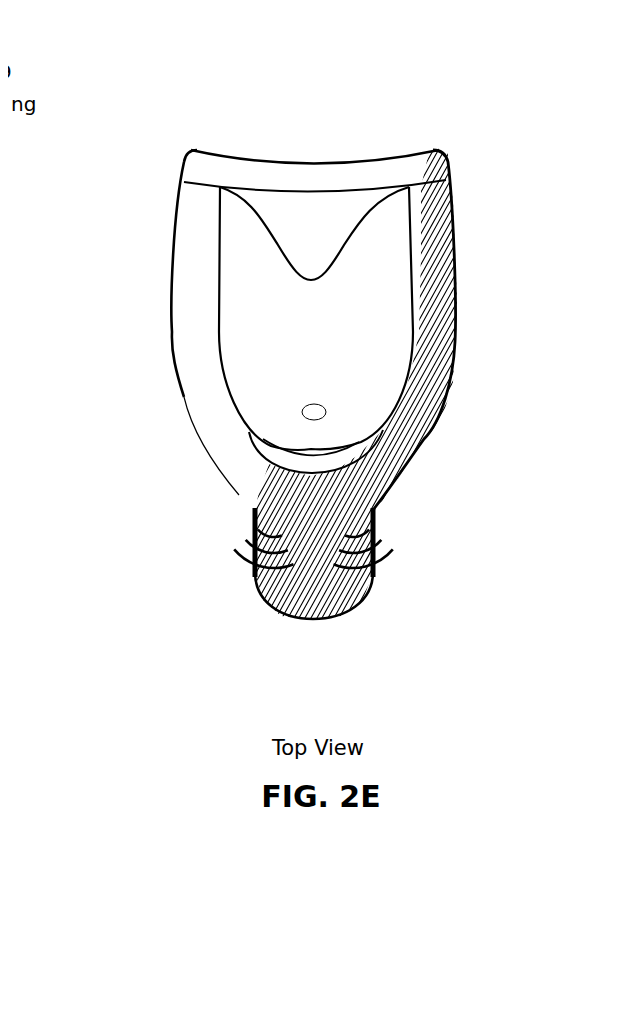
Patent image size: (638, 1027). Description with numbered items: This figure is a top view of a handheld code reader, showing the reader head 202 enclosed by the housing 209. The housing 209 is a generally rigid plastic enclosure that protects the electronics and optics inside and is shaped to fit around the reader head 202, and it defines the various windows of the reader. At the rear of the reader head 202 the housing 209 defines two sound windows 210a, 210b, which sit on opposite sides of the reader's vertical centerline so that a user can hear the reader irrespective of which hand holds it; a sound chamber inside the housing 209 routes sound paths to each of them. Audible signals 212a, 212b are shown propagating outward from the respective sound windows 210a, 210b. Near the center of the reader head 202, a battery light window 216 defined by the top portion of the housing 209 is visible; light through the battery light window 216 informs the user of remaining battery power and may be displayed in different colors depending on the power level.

The reader head 202 is at (170, 220).
The housing 209 is at (410, 440).
The battery light window 216 is at (253, 445).
The sound window 210a is at (253, 510).
The sound window 210b is at (372, 508).
The audible signal 212a is at (218, 565).
The audible signal 212b is at (397, 573).